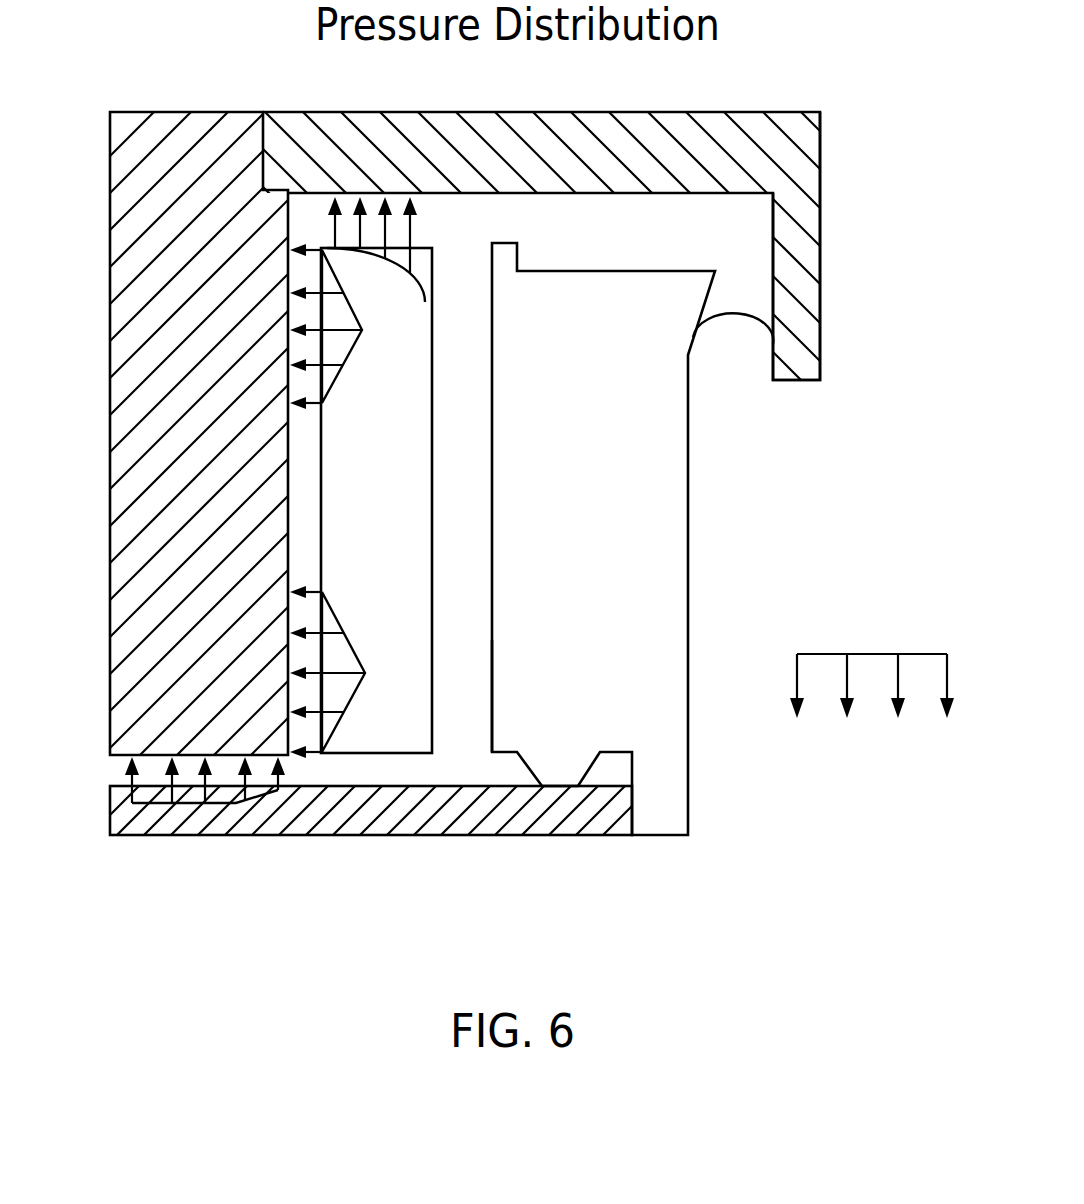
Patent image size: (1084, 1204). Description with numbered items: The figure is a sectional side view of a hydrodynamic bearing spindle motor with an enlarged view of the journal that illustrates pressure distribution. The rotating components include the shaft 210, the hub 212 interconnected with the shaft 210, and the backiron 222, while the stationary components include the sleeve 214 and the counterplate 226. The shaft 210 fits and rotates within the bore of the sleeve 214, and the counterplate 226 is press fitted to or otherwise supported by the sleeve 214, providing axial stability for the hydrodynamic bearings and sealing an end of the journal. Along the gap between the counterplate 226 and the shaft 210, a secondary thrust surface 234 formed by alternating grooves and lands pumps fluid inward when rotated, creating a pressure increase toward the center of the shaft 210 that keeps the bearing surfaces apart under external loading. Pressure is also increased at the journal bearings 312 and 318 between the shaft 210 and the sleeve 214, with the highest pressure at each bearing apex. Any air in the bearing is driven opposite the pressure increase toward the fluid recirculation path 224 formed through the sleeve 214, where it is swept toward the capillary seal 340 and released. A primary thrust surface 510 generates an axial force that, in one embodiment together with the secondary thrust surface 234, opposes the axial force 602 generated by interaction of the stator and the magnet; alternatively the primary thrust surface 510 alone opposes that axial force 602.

The shaft 210 is at (222, 450).
The hub 212 is at (567, 122).
The sleeve 214 is at (409, 643).
The backiron 222 is at (793, 264).
The fluid recirculation path 224 is at (467, 677).
The counterplate 226 is at (460, 820).
The secondary thrust surface 234 is at (150, 817).
The journal bearing 312 is at (341, 367).
The journal bearing 318 is at (350, 700).
The capillary seal 340 is at (738, 324).
The primary thrust surface 510 is at (395, 264).
The axial force 602 is at (797, 677).